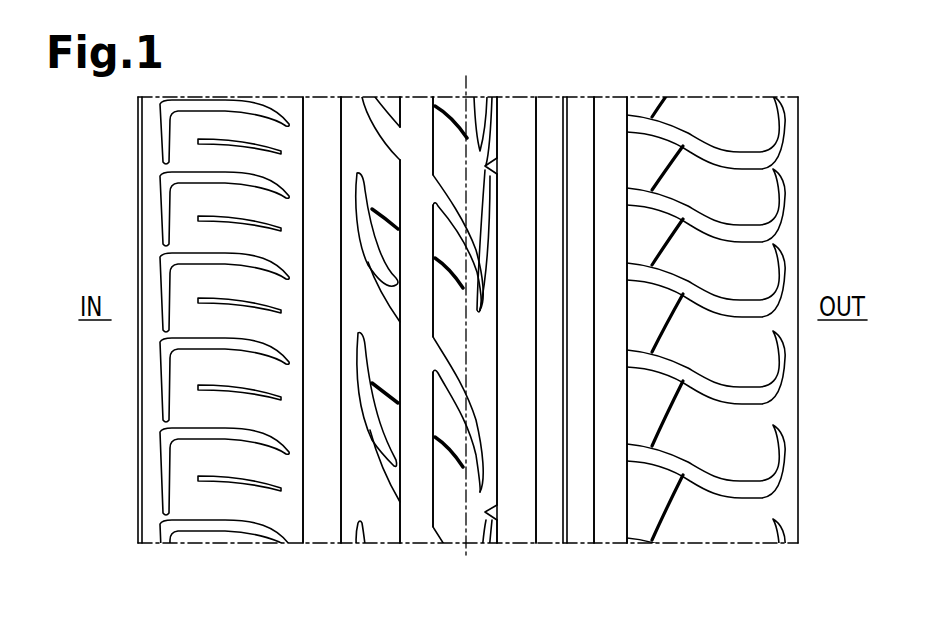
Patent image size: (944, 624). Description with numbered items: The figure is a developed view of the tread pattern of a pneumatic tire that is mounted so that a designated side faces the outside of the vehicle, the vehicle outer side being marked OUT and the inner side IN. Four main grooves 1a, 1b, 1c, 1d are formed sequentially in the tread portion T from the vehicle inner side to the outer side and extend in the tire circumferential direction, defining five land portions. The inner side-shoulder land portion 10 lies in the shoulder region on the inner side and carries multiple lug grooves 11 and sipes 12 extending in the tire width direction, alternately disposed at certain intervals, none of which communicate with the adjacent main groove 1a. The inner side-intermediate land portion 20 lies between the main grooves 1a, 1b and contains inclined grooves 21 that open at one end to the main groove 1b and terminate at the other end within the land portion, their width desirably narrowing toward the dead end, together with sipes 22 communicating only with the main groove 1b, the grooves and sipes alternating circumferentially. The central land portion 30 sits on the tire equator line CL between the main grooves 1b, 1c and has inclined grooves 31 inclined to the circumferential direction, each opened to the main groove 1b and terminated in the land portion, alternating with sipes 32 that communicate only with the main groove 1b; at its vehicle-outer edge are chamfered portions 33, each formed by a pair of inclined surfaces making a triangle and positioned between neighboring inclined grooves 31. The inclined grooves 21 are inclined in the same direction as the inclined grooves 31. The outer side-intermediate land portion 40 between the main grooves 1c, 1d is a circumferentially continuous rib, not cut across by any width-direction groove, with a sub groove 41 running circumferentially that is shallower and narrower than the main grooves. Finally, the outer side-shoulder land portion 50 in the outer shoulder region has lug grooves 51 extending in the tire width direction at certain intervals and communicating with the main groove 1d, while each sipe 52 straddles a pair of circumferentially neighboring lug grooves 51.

The tread portion T is at (771, 93).
The inner side-shoulder land portion 10 is at (220, 322).
The lug grooves 11 is at (210, 100).
The sipes 12 is at (258, 141).
The main groove 1a is at (320, 108).
The inner side-intermediate land portion 20 is at (370, 322).
The inclined grooves 21 is at (369, 262).
The sipes 22 is at (372, 208).
The main groove 1b is at (414, 108).
The central land portion 30 is at (469, 305).
The inclined grooves 31 is at (448, 193).
The sipes 32 is at (444, 105).
The chamfered portions 33 is at (488, 160).
The tire equator line CL is at (465, 300).
The main groove 1c is at (514, 108).
The outer side-intermediate land portion 40 is at (565, 322).
The sub groove 41 is at (564, 97).
The main groove 1d is at (614, 108).
The outer side-shoulder land portion 50 is at (712, 322).
The lug grooves 51 is at (727, 150).
The sipes 52 is at (668, 166).